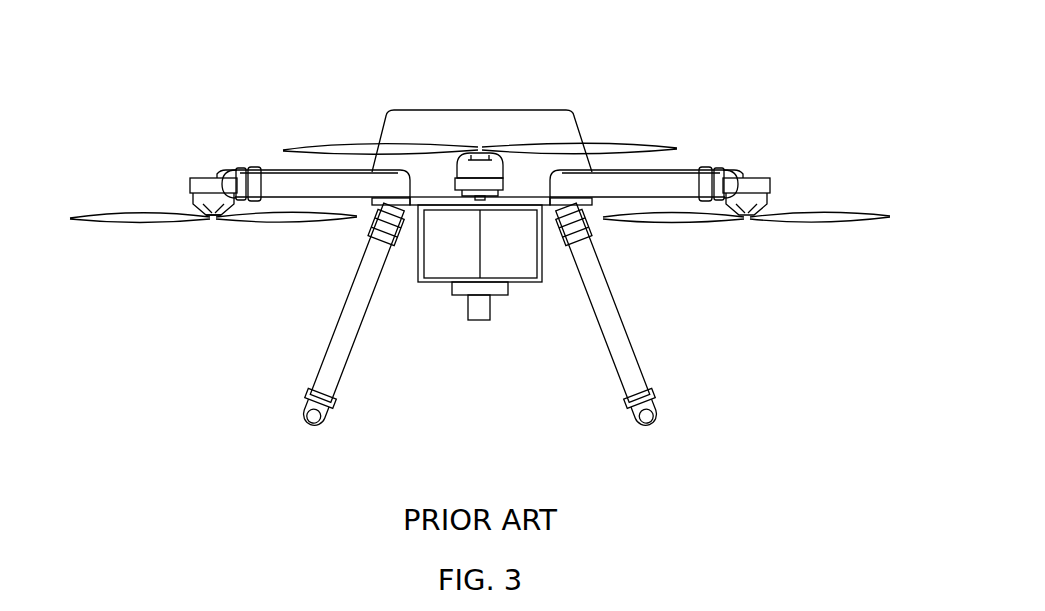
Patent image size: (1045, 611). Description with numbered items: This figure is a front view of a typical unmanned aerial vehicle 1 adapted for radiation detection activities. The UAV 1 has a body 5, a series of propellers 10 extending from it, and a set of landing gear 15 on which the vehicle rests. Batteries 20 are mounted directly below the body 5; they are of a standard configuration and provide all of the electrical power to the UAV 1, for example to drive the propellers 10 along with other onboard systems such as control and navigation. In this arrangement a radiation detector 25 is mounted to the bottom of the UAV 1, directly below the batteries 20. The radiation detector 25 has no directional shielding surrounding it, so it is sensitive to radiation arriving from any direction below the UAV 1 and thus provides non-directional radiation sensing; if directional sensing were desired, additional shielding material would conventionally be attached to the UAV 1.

The unmanned aerial vehicle 1 is at (230, 97).
The body 5 is at (520, 118).
The propellers 10 is at (608, 143).
The landing gear 15 is at (341, 337).
The batteries 20 is at (438, 263).
The radiation detector 25 is at (477, 315).